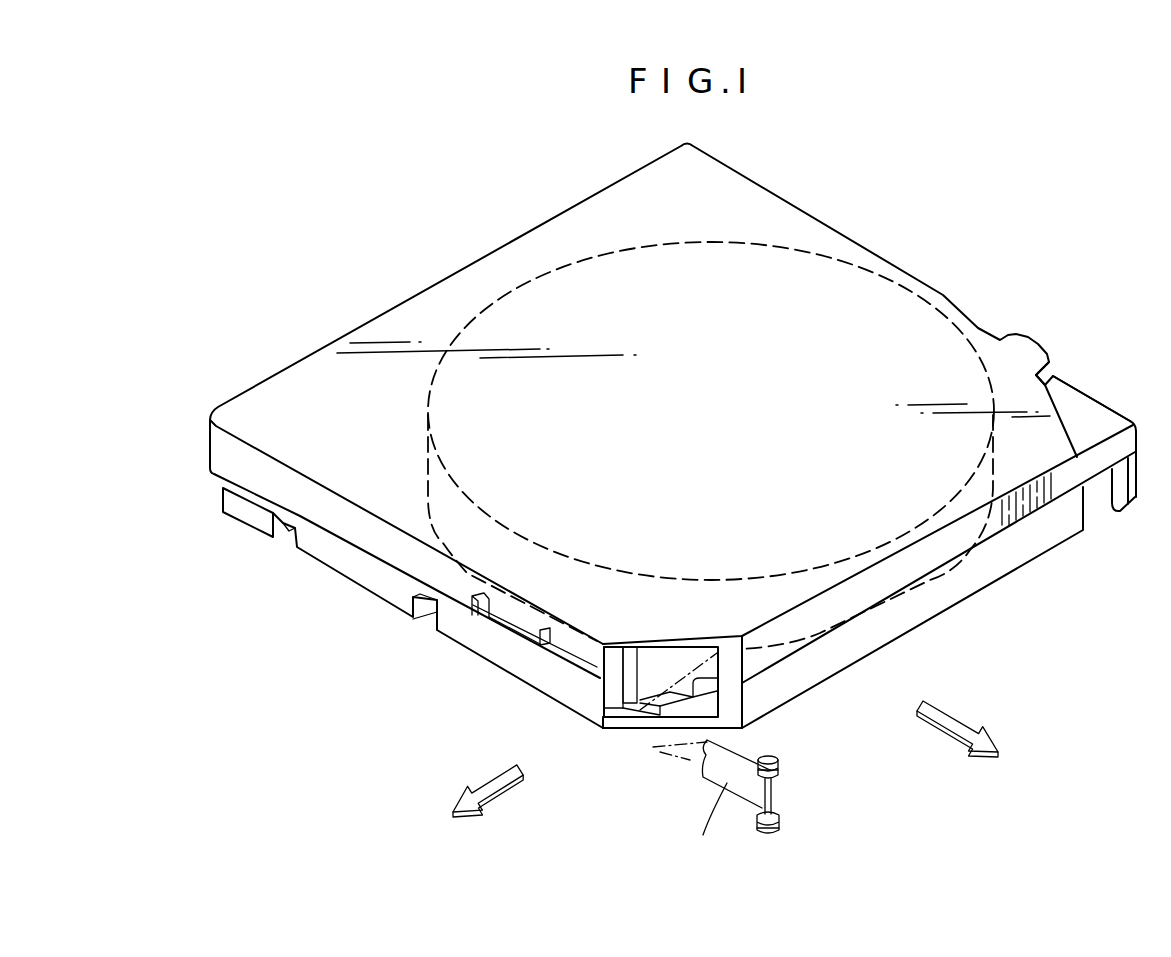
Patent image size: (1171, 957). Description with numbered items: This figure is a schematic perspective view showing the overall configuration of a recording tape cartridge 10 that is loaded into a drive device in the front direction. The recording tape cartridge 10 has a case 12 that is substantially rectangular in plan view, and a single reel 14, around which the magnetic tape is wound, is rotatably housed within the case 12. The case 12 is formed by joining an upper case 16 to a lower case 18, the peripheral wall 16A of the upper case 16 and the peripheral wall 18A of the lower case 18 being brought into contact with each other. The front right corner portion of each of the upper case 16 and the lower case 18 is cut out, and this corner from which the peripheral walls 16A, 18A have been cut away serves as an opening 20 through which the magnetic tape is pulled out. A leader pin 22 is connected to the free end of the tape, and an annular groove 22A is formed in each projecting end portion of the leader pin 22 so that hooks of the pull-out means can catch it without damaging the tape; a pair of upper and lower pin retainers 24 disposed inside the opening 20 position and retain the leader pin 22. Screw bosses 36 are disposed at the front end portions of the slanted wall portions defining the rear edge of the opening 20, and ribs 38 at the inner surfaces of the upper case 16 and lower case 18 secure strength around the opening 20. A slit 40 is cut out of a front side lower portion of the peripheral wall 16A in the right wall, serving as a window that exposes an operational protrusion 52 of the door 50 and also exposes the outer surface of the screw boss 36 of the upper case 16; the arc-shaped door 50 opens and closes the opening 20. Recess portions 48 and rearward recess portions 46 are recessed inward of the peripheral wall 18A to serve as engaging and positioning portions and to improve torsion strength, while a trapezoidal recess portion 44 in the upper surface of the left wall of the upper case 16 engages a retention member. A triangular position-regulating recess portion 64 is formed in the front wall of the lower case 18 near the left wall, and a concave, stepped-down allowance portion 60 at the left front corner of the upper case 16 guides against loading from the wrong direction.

The recording tape cartridge 10 is at (975, 148).
The case 12 is at (751, 175).
The reel 14 is at (602, 283).
The upper case 16 is at (223, 450).
The peripheral wall 16A is at (1003, 517).
The lower case 18 is at (247, 515).
The peripheral wall 18A is at (967, 582).
The opening 20 is at (620, 730).
The leader pin 22 is at (781, 758).
The annular groove 22A is at (780, 830).
The pin retainer 24 is at (698, 677).
The screw boss 36 is at (623, 702).
The rib 38 is at (630, 730).
The slit 40 is at (520, 636).
The recess portion 44 is at (985, 326).
The recess portion 46 is at (287, 530).
The recess portion 48 is at (420, 618).
The door 50 is at (505, 628).
The operational protrusion 52 is at (437, 633).
The allowance portion 60 is at (1092, 410).
The position-regulating recess portion 64 is at (1097, 497).